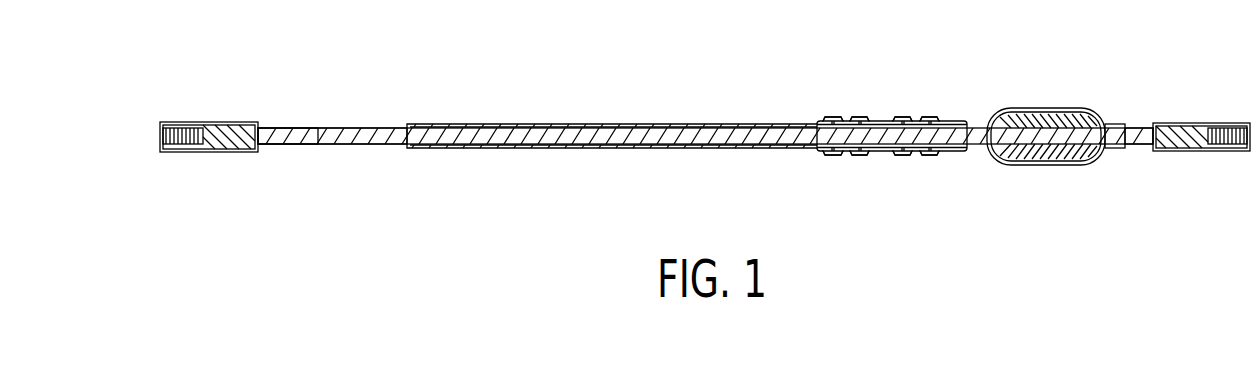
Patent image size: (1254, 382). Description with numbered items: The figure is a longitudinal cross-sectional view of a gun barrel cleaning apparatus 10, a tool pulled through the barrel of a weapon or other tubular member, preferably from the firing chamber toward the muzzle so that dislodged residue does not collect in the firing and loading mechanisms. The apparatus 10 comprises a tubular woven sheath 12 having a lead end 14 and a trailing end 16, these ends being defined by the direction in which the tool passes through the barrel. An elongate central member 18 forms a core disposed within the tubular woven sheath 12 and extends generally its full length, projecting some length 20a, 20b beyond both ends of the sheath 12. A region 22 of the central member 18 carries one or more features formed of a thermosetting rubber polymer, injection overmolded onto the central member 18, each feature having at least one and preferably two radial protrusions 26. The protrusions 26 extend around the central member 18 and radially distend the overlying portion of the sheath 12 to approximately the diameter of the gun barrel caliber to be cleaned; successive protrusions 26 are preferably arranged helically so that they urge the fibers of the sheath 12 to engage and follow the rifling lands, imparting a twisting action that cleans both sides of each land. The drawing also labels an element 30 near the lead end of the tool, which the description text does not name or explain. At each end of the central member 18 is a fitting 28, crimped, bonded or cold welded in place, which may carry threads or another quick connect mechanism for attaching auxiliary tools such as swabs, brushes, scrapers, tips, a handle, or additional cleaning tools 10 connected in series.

The apparatus 10 is at (752, 84).
The tubular woven sheath 12 is at (546, 148).
The lead end 14 is at (1113, 123).
The trailing end 16 is at (404, 124).
The elongate central member 18 is at (318, 128).
The length beyond end of sheath 20a is at (1142, 143).
The length beyond end of sheath 20b is at (296, 143).
The region of central member 22 is at (975, 207).
The radial protrusions 26 is at (932, 117).
The fitting 28 is at (225, 127).
The balloon 30 is at (1060, 160).